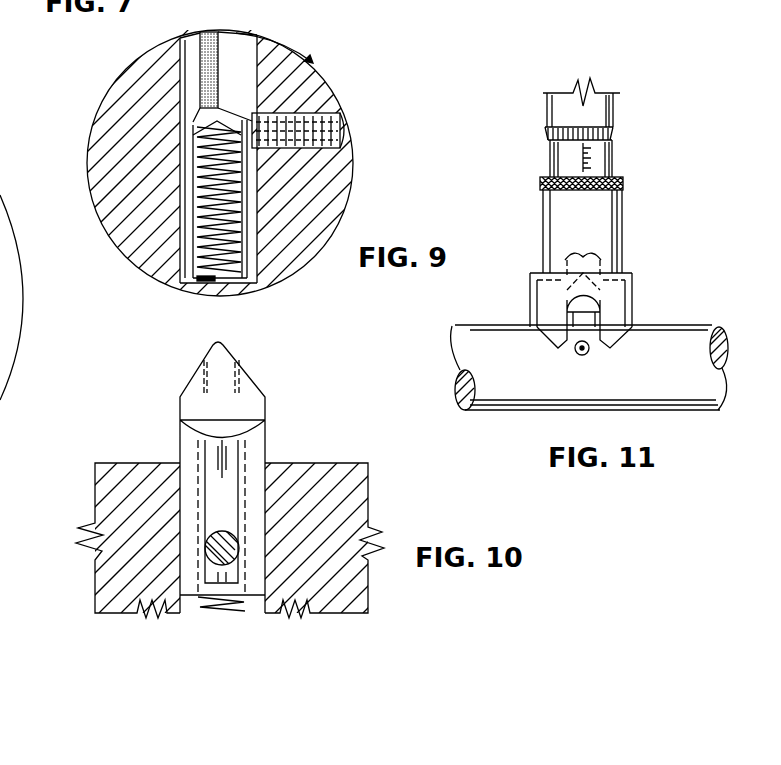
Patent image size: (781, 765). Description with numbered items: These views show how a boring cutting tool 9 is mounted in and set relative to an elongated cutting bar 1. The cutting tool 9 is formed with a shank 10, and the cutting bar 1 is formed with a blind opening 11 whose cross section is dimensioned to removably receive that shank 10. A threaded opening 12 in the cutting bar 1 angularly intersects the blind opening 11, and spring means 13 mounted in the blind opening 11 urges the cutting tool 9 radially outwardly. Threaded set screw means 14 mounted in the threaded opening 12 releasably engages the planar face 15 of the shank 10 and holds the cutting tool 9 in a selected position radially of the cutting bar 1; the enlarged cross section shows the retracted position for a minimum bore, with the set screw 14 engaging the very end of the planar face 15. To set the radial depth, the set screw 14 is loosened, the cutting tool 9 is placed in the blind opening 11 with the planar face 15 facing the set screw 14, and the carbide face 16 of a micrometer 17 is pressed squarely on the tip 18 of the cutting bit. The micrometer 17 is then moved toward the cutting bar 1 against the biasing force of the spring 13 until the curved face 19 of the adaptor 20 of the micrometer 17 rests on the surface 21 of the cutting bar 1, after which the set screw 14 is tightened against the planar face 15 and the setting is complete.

In FIG. 9, the cutting bar 1 is at (321, 81).
In FIG. 10, the cutting bar 1 is at (337, 465).
In FIG. 11, the cutting bar 1 is at (679, 325).
In FIG. 9, the cutting tool 9 is at (179, 201).
In FIG. 10, the cutting tool 9 is at (179, 441).
In FIG. 9, the shank 10 is at (188, 227).
In FIG. 10, the shank 10 is at (183, 513).
In FIG. 9, the blind opening 11 is at (256, 62).
In FIG. 10, the blind opening 11 is at (258, 478).
In FIG. 9, the threaded opening 12 is at (346, 140).
In FIG. 9, the spring means 13 is at (195, 279).
In FIG. 10, the spring means 13 is at (232, 606).
In FIG. 9, the threaded set screw means 14 is at (303, 117).
In FIG. 10, the threaded set screw means 14 is at (220, 550).
In FIG. 11, the threaded set screw means 14 is at (576, 353).
In FIG. 9, the planar face 15 is at (252, 173).
In FIG. 10, the planar face 15 is at (219, 450).
In FIG. 11, the carbide face 16 is at (622, 291).
In FIG. 11, the micrometer 17 is at (622, 211).
In FIG. 9, the tip 18 is at (218, 32).
In FIG. 10, the tip 18 is at (222, 344).
In FIG. 11, the tip 18 is at (563, 280).
In FIG. 11, the curved face 19 is at (540, 337).
In FIG. 11, the adaptor 20 is at (633, 306).
In FIG. 9, the surface 21 is at (122, 80).
In FIG. 10, the surface 21 is at (118, 463).
In FIG. 11, the surface 21 is at (672, 377).